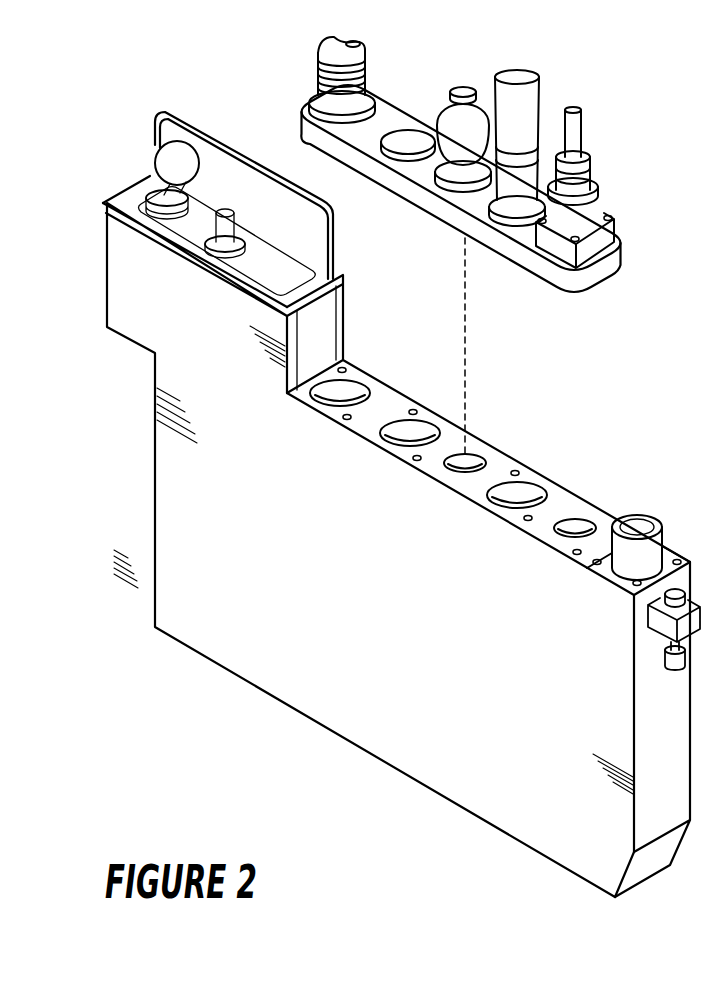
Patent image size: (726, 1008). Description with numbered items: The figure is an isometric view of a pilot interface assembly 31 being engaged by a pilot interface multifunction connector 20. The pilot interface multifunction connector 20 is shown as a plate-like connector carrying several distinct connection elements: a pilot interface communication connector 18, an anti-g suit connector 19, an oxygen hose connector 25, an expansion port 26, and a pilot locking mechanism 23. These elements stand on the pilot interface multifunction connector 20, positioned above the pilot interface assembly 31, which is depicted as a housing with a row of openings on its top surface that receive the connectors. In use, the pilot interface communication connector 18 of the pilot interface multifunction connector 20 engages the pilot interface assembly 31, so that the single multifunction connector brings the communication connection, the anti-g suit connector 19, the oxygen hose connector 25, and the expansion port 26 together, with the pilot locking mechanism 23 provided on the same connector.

The pilot interface communication connector 18 is at (593, 198).
The anti-g suit connector 19 is at (507, 89).
The pilot interface multifunction connector 20 is at (424, 201).
The pilot locking mechanism 23 is at (451, 112).
The oxygen hose connector 25 is at (327, 55).
The expansion port 26 is at (408, 136).
The pilot interface assembly 31 is at (325, 700).